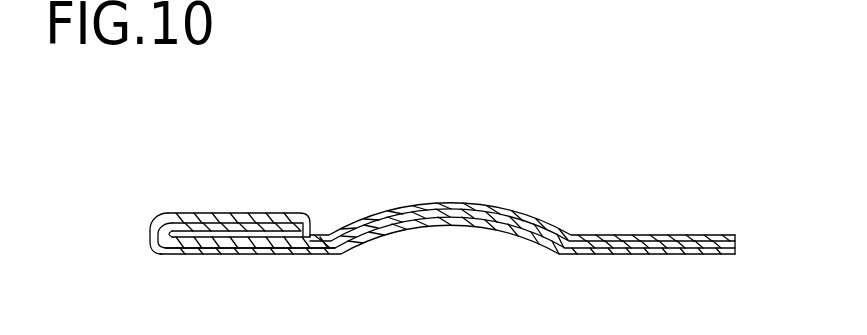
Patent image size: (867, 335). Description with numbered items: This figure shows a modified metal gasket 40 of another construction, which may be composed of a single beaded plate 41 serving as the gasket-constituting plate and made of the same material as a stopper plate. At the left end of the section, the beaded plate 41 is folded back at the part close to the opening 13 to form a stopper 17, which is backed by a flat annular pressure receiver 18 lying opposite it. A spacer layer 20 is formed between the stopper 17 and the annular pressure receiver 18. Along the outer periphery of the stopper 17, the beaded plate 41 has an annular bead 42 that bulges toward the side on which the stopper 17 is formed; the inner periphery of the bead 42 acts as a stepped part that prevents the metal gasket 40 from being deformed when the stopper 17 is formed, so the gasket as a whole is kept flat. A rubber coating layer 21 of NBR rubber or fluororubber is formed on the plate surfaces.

The opening 13 is at (151, 224).
The stopper 17 is at (260, 215).
The annular pressure receiver 18 is at (211, 252).
The spacer layer 20 is at (230, 232).
The rubber coating layer 21 is at (608, 255).
The metal gasket 40 is at (648, 176).
The beaded plate 41 is at (697, 236).
The annular bead 42 is at (518, 219).